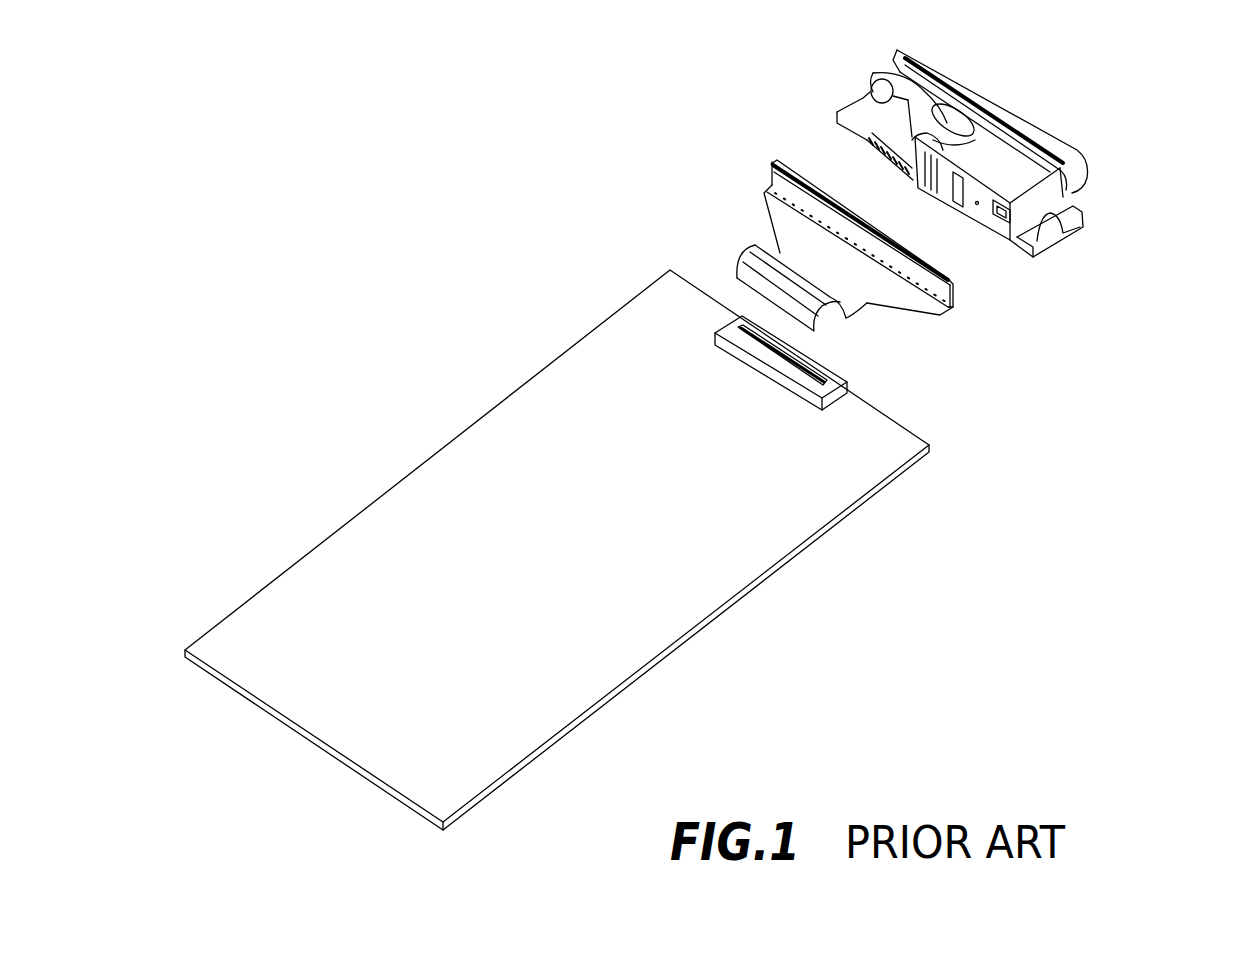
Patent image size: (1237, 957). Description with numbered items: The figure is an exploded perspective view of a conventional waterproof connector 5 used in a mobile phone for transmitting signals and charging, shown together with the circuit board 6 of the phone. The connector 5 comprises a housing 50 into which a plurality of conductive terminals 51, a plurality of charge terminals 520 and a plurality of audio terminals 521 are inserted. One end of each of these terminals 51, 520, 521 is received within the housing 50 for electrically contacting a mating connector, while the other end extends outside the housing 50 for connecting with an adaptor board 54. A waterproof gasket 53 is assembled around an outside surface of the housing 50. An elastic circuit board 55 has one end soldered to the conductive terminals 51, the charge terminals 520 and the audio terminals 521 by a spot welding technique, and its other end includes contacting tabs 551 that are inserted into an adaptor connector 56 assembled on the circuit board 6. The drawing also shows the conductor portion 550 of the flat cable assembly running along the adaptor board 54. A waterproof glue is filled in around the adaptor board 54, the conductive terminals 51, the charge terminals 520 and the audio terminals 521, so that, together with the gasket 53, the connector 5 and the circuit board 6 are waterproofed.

The waterproof connector 5 is at (1158, 195).
The circuit board 6 is at (668, 638).
The housing 50 is at (951, 183).
The conductive terminals 51 is at (865, 152).
The waterproof gasket 53 is at (1071, 167).
The adaptor board 54 is at (785, 160).
The elastic circuit board 55 is at (900, 298).
The adaptor connector 56 is at (835, 378).
The charge terminals 520 is at (1003, 223).
The audio terminals 521 is at (977, 203).
The conductors 550 is at (780, 175).
The contacting tabs 551 is at (738, 272).